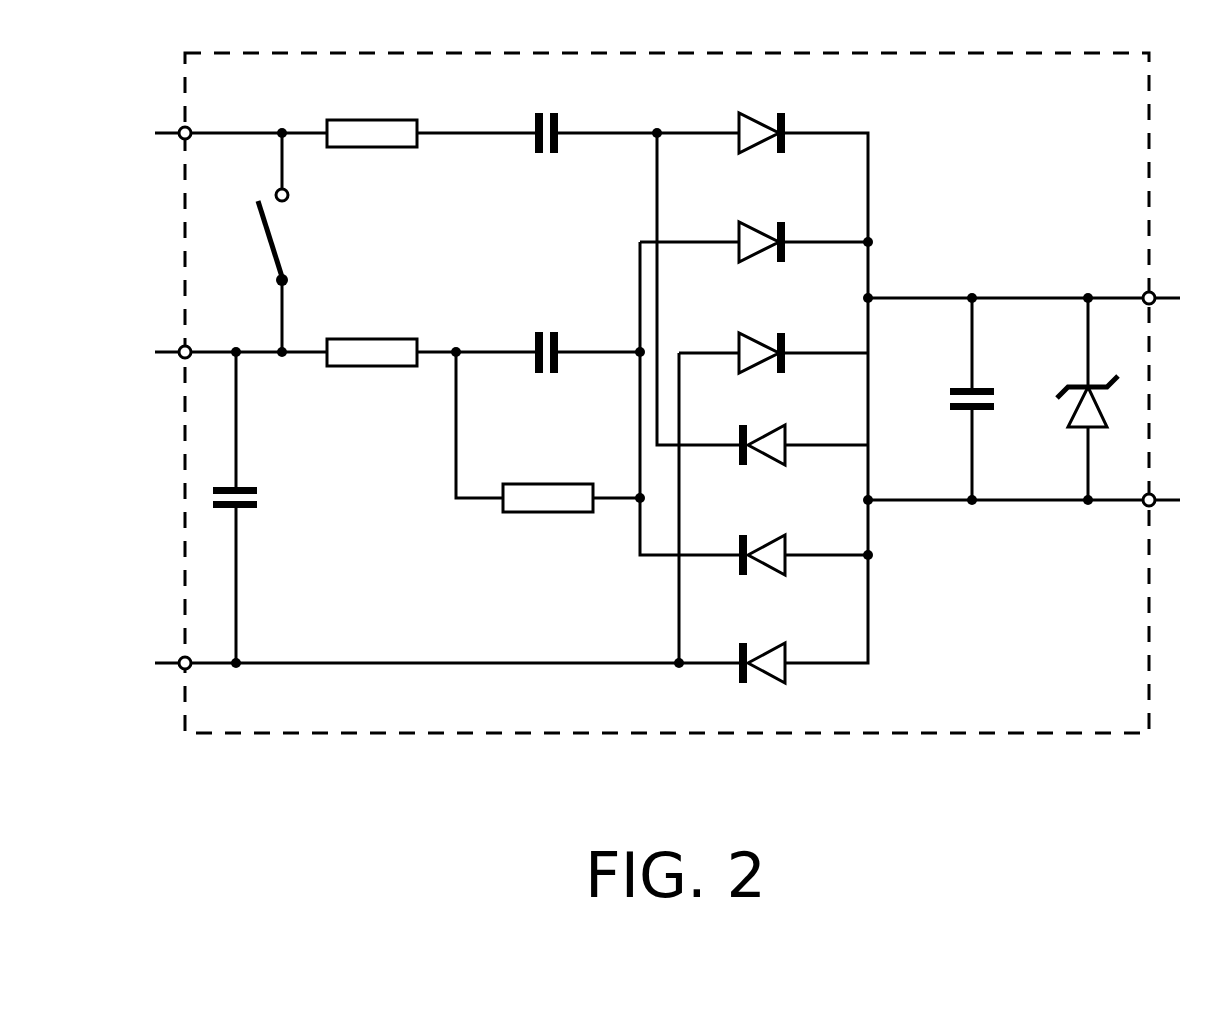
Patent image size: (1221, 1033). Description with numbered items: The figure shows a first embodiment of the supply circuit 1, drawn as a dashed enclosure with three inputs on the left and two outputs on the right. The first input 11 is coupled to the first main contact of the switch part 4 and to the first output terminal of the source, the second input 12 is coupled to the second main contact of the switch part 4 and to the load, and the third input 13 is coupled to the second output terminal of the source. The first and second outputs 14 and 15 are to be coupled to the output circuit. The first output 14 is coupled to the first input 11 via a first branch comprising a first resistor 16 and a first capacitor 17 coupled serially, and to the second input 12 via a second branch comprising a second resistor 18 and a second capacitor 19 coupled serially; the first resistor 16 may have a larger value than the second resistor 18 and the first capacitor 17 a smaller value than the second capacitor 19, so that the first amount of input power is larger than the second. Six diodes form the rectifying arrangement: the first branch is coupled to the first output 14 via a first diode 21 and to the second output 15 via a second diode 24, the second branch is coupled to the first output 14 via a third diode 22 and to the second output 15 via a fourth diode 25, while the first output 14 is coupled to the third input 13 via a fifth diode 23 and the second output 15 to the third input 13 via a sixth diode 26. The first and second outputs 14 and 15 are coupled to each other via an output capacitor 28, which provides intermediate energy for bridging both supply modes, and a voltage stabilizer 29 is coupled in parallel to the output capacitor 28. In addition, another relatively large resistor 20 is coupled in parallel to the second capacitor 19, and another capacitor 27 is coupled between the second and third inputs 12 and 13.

The supply circuit 1 is at (1040, 735).
The switch part 4 is at (270, 240).
The first input 11 is at (181, 140).
The second input 12 is at (181, 359).
The third input 13 is at (181, 670).
The first output 14 is at (1153, 305).
The second output 15 is at (1153, 507).
The first resistor 16 is at (372, 147).
The first capacitor 17 is at (548, 153).
The second resistor 18 is at (372, 366).
The second capacitor 19 is at (548, 373).
The resistor 20 is at (548, 512).
The first diode 21 is at (786, 125).
The third diode 22 is at (786, 234).
The fifth diode 23 is at (786, 345).
The second diode 24 is at (786, 435).
The fourth diode 25 is at (786, 545).
The sixth diode 26 is at (786, 653).
The capacitor 27 is at (257, 496).
The output capacitor 28 is at (968, 390).
The voltage stabilizer 29 is at (1082, 386).